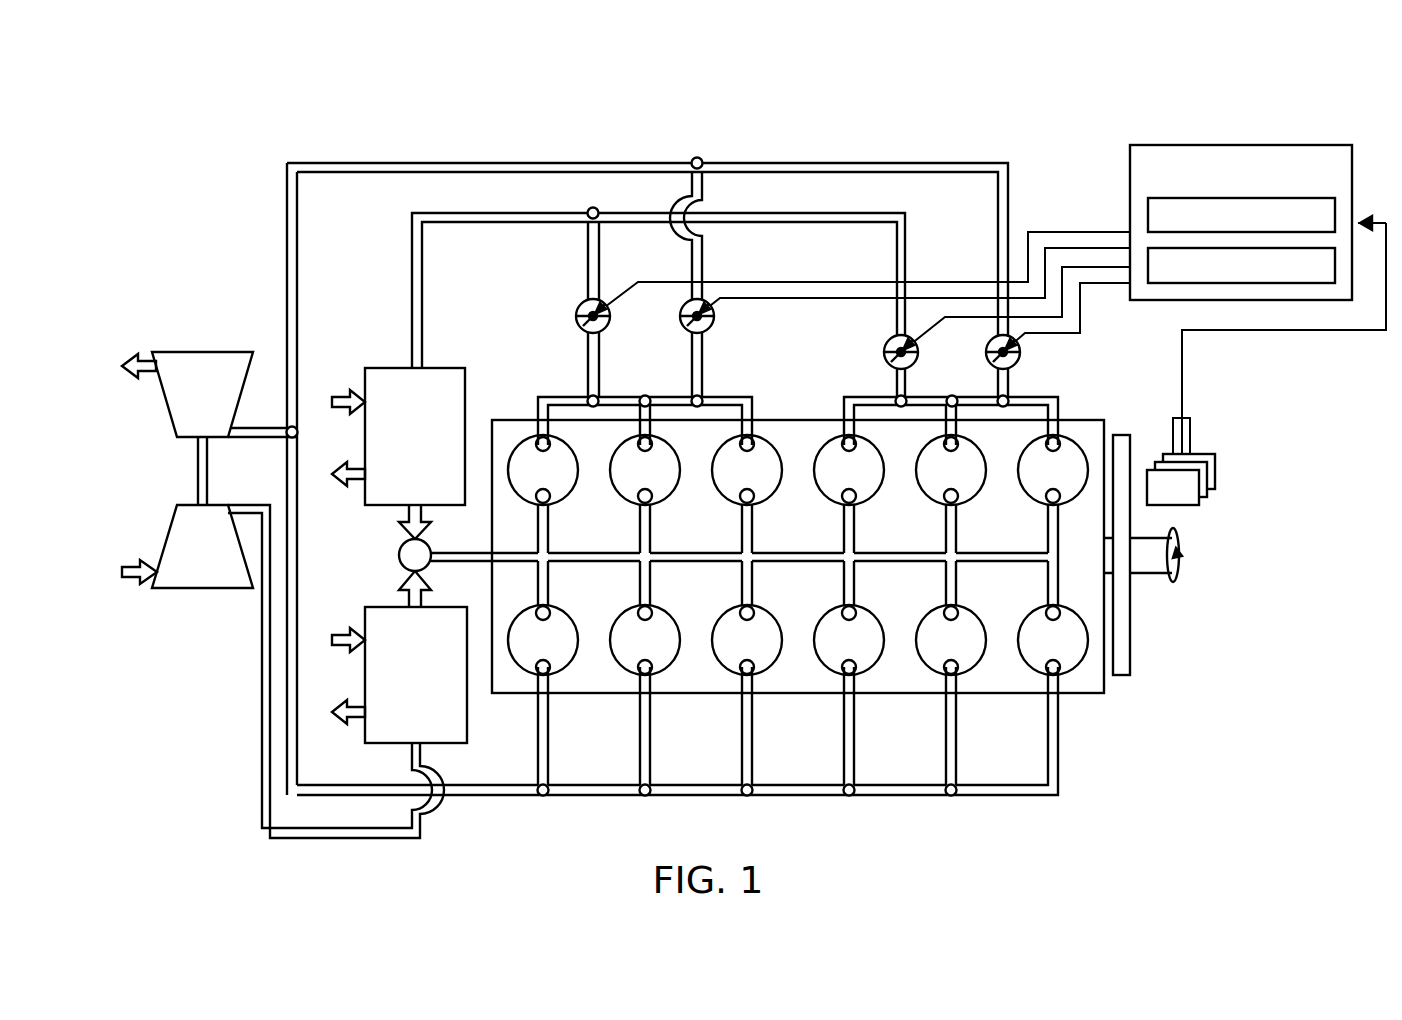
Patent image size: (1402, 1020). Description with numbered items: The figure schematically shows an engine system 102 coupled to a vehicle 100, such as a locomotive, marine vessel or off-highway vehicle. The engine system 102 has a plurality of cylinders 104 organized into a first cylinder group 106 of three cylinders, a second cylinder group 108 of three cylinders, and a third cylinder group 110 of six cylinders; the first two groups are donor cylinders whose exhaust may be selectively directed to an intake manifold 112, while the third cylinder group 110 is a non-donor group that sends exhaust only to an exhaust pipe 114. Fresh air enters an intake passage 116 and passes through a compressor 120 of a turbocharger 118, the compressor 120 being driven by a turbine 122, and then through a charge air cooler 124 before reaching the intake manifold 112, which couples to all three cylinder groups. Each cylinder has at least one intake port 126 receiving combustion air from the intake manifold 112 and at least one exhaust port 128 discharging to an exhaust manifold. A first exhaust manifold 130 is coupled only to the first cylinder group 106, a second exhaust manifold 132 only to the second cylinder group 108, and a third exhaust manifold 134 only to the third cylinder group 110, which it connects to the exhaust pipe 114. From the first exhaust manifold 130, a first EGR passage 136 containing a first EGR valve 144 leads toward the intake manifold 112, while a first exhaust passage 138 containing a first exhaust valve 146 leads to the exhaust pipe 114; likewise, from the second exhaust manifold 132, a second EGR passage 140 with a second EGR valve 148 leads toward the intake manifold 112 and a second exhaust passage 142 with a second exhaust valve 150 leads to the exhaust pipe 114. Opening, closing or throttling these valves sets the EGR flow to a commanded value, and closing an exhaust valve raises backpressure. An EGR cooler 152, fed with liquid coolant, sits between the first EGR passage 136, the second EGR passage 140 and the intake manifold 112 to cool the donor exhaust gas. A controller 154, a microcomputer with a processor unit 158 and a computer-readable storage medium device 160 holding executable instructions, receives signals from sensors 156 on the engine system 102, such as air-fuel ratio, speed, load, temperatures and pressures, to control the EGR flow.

The vehicle 100 is at (148, 92).
The engine system 102 is at (837, 556).
The plurality of cylinders 104 is at (833, 516).
The first cylinder group 106 is at (562, 386).
The second cylinder group 108 is at (1050, 372).
The third cylinder group 110 is at (1083, 713).
The intake manifold 112 is at (412, 553).
The exhaust pipe 114 is at (292, 287).
The intake passage 116 is at (263, 718).
The turbocharger 118 is at (148, 314).
The compressor 120 is at (187, 546).
The turbine 122 is at (187, 394).
The charge air cooler 124 is at (399, 675).
The intake port 126 is at (574, 601).
The exhaust port 128 is at (572, 671).
The first exhaust manifold 130 is at (752, 398).
The second exhaust manifold 132 is at (1060, 398).
The third exhaust manifold 134 is at (1062, 794).
The first EGR passage 136 is at (598, 258).
The first exhaust passage 138 is at (702, 258).
The second EGR passage 140 is at (905, 240).
The second exhaust passage 142 is at (1007, 190).
The first EGR valve 144 is at (579, 322).
The first exhaust valve 146 is at (683, 322).
The second EGR valve 148 is at (887, 357).
The second exhaust valve 150 is at (989, 357).
The EGR cooler 152 is at (398, 436).
The controller 154 is at (1241, 222).
The sensors 156 is at (1266, 360).
The processor unit 158 is at (1241, 215).
The computer-readable storage medium device 160 is at (1241, 265).